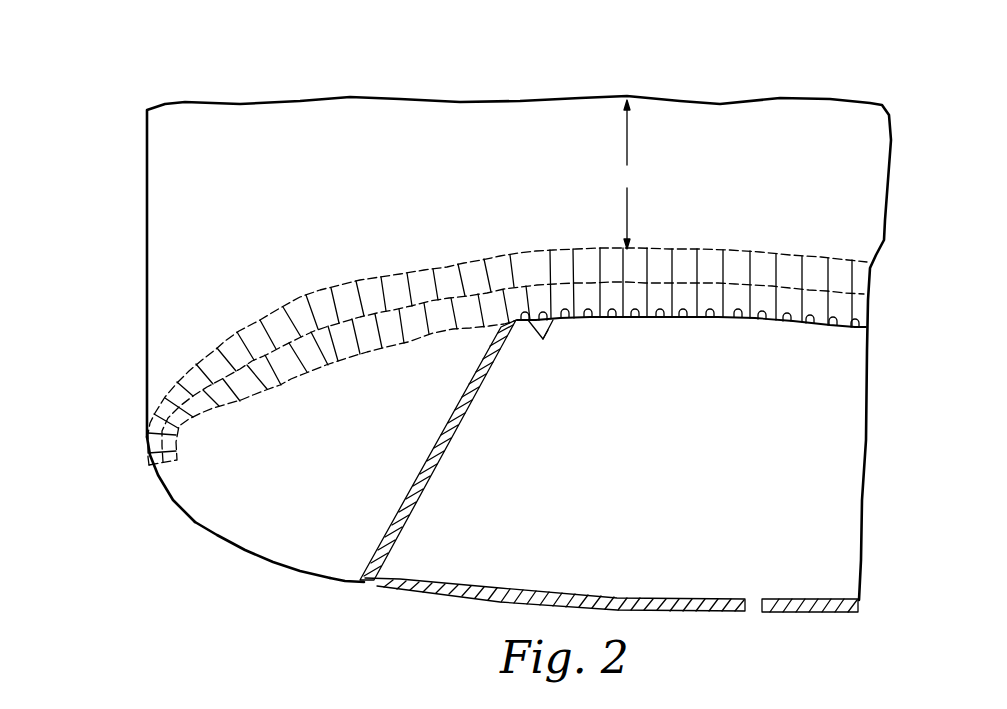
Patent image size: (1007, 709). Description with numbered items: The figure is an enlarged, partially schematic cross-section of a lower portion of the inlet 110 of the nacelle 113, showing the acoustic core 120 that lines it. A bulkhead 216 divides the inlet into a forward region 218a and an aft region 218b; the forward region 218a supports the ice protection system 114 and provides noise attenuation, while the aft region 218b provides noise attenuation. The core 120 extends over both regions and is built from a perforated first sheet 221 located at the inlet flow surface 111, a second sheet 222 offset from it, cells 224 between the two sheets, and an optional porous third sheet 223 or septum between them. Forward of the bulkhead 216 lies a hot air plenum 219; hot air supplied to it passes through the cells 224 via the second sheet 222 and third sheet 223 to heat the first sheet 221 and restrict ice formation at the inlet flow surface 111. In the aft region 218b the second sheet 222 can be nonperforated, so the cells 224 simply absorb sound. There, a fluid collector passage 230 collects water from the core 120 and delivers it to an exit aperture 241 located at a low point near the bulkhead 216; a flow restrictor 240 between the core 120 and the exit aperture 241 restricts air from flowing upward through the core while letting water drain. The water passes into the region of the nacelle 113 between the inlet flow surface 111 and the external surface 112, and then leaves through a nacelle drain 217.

The inlet 110 is at (320, 85).
The inlet flow surface 111 is at (190, 369).
The external surface 112 is at (335, 579).
The nacelle 113 is at (176, 493).
The ice protection system 114 is at (346, 536).
The core 120 is at (545, 304).
The bulkhead 216 is at (398, 538).
The nacelle drain 217 is at (756, 616).
The forward region 218a is at (203, 314).
The aft region 218b is at (840, 238).
The hot air plenum 219 is at (277, 548).
The first sheet 221 is at (258, 320).
The second sheet 222 is at (340, 368).
The third sheet 223 is at (339, 318).
The cells 224 is at (458, 272).
The fluid collector passage 230 is at (742, 332).
The flow restrictor 240 is at (562, 331).
The exit aperture 241 is at (547, 352).